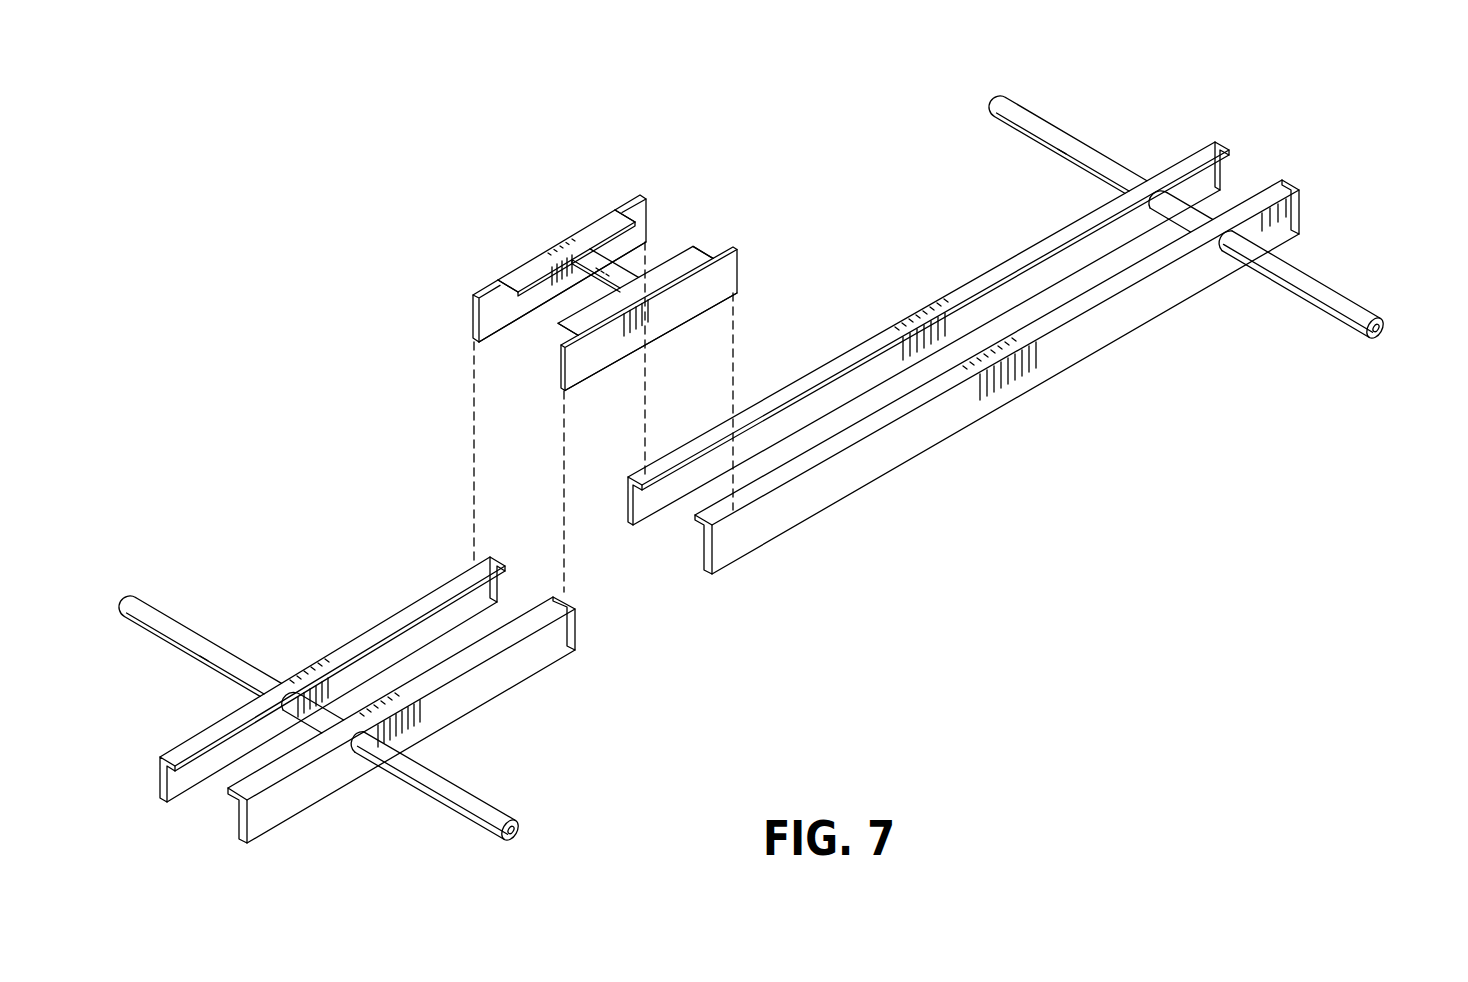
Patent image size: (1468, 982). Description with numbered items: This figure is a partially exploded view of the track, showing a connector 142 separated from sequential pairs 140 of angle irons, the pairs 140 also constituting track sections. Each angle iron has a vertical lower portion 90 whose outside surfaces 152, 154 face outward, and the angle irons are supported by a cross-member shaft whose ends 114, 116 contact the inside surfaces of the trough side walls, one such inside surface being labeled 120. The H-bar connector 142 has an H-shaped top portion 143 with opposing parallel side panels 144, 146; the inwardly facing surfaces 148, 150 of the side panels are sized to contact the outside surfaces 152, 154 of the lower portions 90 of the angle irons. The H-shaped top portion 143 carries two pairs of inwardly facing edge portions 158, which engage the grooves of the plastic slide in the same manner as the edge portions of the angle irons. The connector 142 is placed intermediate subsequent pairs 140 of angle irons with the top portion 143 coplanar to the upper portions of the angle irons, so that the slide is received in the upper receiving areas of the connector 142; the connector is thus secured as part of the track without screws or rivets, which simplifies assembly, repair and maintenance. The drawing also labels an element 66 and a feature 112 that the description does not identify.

The tube 66 is at (790, 537).
The lower portion 90 is at (729, 492).
The tube portion at rail opening 112 is at (1228, 247).
The end of shaft 114 is at (1358, 337).
The end of shaft 116 is at (1013, 96).
The inside surface of side wall 120 is at (1384, 322).
The pair of angle irons 140 is at (469, 498).
The H-bar connector 142 is at (537, 247).
The H-shaped top portion 143 is at (596, 228).
The side panel 144 is at (475, 297).
The side panel 146 is at (705, 287).
The inwardly facing surface 148 is at (472, 343).
The inwardly facing surface 150 is at (560, 373).
The outside surface 152 is at (625, 503).
The outside surface 154 is at (782, 517).
The inwardly facing edge portions 158 is at (618, 218).